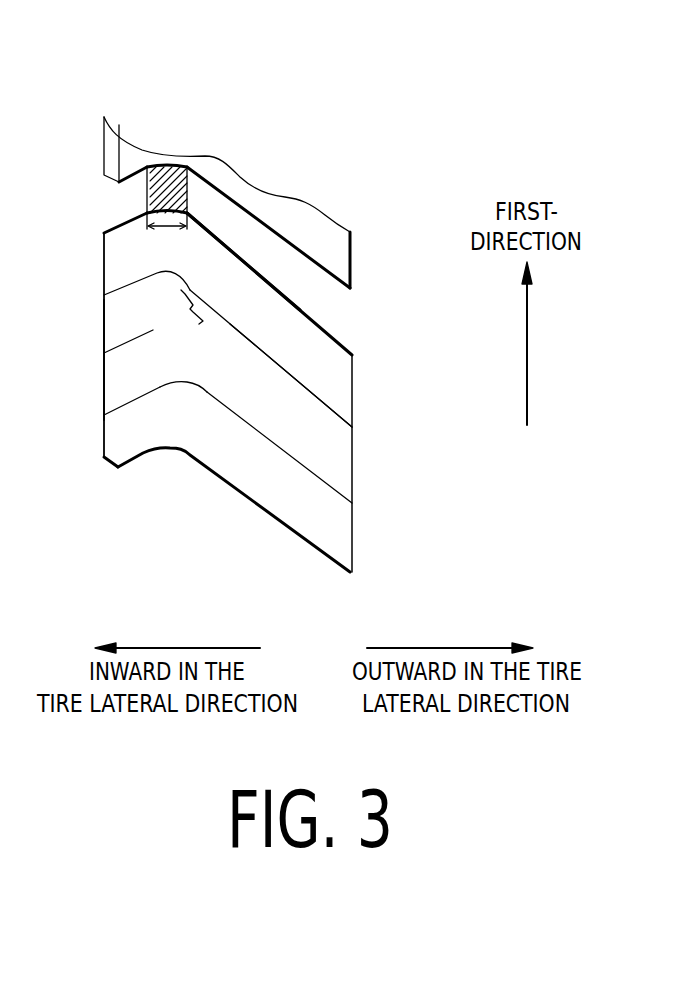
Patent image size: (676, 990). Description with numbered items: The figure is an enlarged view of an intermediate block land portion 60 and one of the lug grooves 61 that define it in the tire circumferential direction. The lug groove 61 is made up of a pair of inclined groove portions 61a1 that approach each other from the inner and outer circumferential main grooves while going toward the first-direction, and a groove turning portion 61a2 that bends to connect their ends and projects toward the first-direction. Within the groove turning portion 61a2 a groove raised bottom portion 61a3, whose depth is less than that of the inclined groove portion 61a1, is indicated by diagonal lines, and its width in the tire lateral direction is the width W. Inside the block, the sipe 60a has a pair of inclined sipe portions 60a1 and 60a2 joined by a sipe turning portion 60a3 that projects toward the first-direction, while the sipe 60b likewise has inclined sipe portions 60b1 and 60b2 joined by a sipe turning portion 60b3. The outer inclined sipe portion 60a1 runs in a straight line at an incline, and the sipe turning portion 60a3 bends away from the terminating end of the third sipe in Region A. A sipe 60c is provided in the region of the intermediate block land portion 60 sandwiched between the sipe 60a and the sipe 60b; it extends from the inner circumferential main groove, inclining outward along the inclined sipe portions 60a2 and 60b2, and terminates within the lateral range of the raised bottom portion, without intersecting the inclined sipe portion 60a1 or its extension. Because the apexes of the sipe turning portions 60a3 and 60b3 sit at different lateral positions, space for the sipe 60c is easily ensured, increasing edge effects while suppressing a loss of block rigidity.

The intermediate block land portion 60 is at (358, 399).
The sipe 60a is at (305, 374).
The inclined sipe portion 60a1 is at (247, 340).
The inclined sipe portion 60a2 is at (122, 285).
The sipe turning portion 60a3 is at (183, 273).
The sipe 60b is at (290, 461).
The inclined sipe portion 60b1 is at (332, 490).
The inclined sipe portion 60b2 is at (141, 397).
The sipe turning portion 60b3 is at (187, 384).
The sipe 60c is at (120, 354).
The lug groove 61 is at (333, 306).
The inclined groove portion 61a1 is at (127, 198).
The groove turning portion 61a2 is at (180, 166).
The groove raised bottom portion 61a3 is at (160, 166).